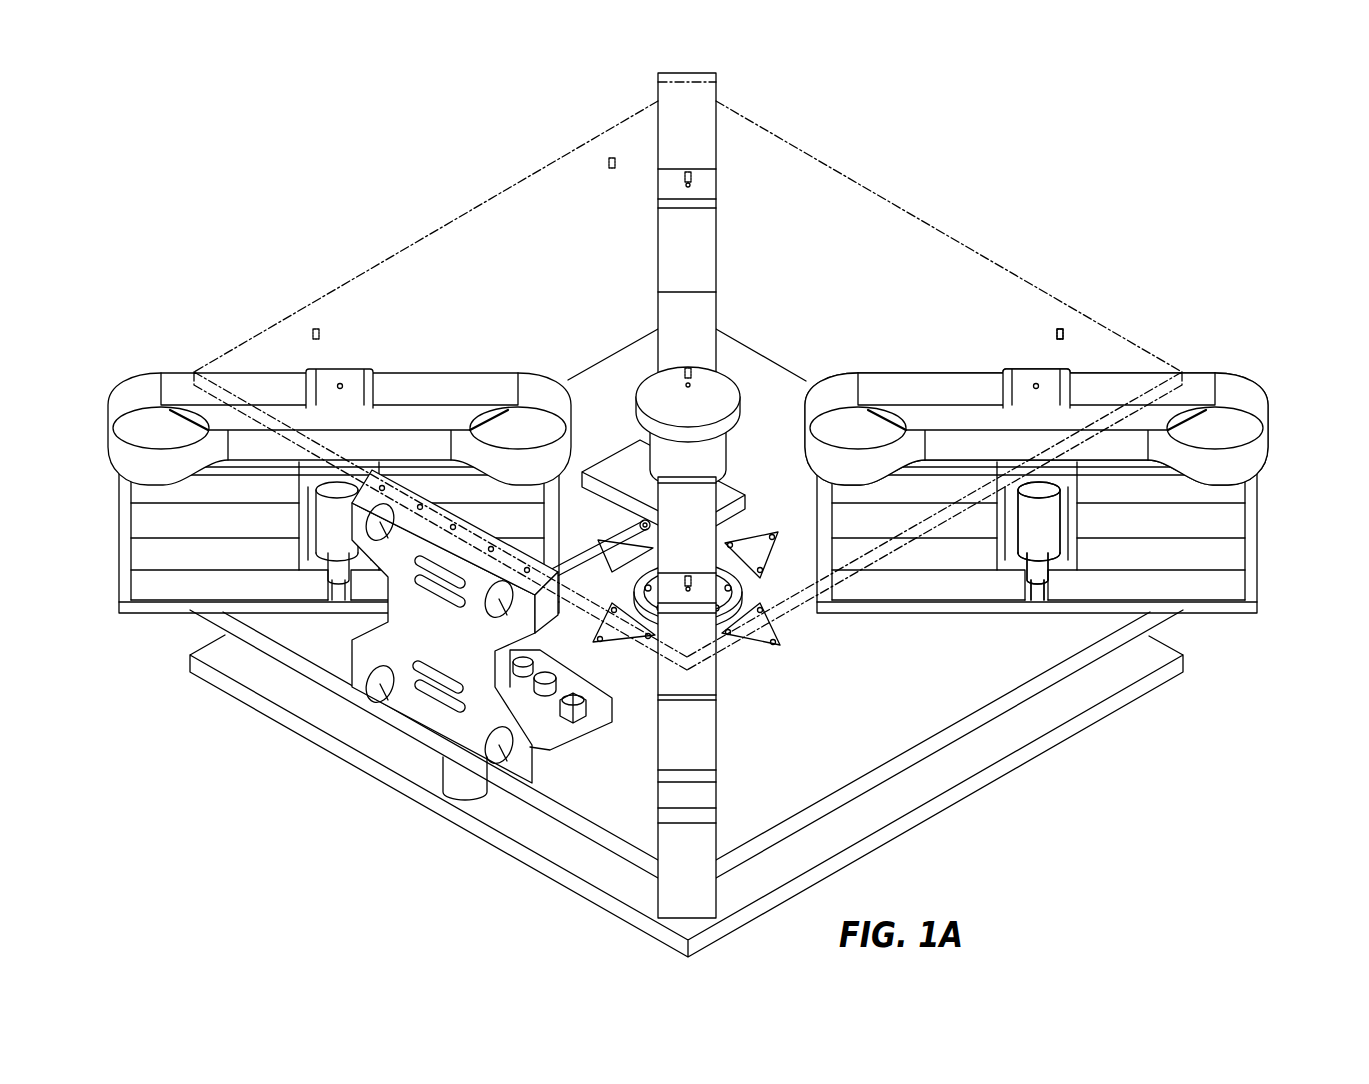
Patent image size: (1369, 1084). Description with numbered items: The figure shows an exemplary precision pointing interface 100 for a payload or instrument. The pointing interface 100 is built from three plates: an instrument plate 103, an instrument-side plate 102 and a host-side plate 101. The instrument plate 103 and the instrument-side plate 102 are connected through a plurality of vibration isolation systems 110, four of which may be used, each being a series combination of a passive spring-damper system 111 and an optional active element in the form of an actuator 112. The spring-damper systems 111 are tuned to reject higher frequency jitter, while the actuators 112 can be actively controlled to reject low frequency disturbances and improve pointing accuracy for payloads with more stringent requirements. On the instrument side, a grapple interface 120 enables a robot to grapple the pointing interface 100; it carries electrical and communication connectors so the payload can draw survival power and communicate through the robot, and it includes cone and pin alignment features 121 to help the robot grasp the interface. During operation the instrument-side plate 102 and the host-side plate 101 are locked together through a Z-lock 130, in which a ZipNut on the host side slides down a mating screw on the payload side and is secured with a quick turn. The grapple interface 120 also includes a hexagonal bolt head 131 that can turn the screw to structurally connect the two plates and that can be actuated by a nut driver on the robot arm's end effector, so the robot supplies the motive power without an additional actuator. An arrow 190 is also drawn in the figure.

The precision pointing interface 100 is at (700, 498).
The host-side plate 101 is at (958, 760).
The instrument-side plate 102 is at (980, 690).
The instrument plate 103 is at (430, 235).
The vibration isolation system 110 is at (1276, 396).
The passive spring-damper system 111 is at (703, 74).
The actuator 112 is at (1040, 541).
The grapple interface 120 is at (405, 613).
The cone and pin alignment features 121 is at (367, 528).
The Z-lock 130 is at (718, 395).
The hexagonal bolt head 131 is at (427, 630).
The direction arrow 190 is at (306, 805).